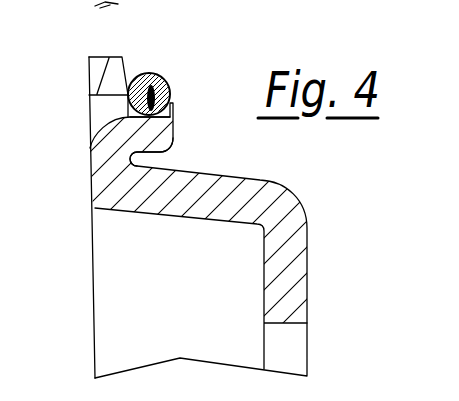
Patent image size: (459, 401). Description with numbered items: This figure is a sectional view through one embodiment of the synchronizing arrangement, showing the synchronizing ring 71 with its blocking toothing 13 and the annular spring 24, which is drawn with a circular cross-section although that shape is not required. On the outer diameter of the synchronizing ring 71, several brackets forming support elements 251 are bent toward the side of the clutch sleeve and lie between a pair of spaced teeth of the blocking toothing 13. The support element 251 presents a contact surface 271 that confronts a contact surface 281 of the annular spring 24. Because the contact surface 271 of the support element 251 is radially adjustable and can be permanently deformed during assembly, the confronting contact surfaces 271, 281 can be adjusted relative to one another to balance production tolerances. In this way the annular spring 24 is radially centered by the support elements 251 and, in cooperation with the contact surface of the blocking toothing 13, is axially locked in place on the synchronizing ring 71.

The blocking toothing 13 is at (120, 83).
The annular spring 24 is at (170, 97).
The synchronizing ring 71 is at (198, 219).
The support element 251 is at (161, 141).
The contact surface 271 is at (152, 86).
The contact surface 281 is at (149, 121).